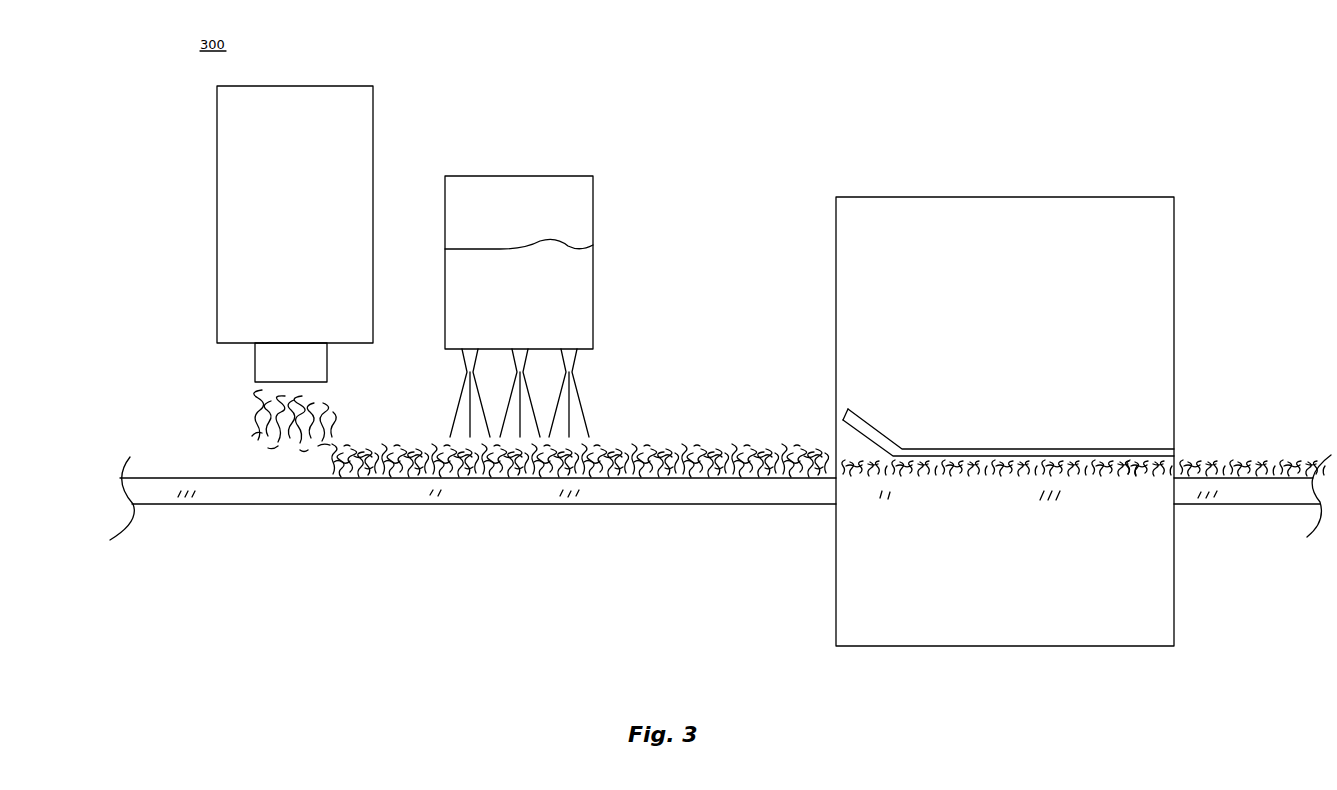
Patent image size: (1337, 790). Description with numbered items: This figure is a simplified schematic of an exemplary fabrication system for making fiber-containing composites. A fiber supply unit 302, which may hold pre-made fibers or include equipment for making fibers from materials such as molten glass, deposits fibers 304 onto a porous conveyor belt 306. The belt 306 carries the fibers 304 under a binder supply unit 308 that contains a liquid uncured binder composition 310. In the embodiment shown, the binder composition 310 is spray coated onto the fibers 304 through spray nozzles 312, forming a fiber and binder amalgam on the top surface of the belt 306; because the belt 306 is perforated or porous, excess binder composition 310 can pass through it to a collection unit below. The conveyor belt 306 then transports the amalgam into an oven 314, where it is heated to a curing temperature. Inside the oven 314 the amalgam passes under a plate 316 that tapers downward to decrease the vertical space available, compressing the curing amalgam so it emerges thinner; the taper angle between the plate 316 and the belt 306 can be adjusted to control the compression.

The fiber supply unit 302 is at (375, 137).
The fibers 304 is at (238, 419).
The porous conveyor belt 306 is at (275, 497).
The binder supply unit 308 is at (593, 210).
The binder composition 310 is at (573, 302).
The spray nozzles 312 is at (576, 368).
The oven 314 is at (1174, 255).
The plate 316 is at (887, 428).